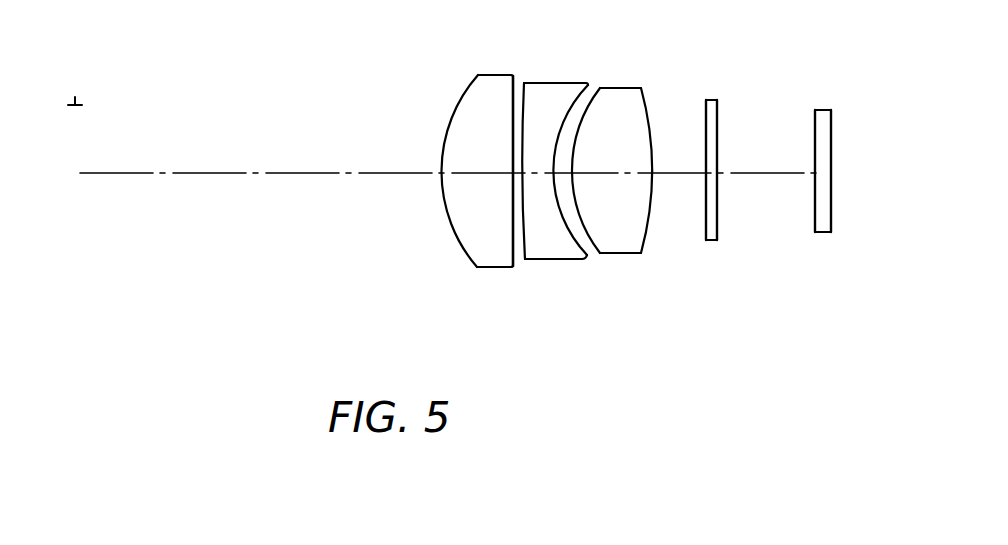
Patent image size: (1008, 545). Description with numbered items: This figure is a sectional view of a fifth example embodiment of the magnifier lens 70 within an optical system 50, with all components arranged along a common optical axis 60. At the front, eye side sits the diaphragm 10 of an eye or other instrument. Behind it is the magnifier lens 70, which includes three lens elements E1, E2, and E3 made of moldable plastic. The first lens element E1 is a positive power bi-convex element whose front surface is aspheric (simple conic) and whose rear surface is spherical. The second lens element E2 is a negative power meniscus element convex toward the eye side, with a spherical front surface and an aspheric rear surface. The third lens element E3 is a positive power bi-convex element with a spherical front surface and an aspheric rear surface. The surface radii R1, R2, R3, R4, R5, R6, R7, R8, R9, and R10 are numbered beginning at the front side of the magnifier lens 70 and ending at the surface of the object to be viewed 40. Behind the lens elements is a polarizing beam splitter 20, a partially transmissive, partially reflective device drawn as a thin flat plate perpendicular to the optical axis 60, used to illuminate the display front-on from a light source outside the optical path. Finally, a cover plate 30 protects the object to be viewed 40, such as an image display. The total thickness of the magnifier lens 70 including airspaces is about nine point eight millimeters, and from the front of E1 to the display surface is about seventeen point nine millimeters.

The diaphragm 10 is at (70, 233).
The polarizing beam splitter 20 is at (728, 163).
The cover plate 30 is at (802, 173).
The object to be viewed 40 is at (851, 173).
The optical system 50 is at (686, 397).
The optical axis 60 is at (302, 174).
The magnifier lens 70 is at (544, 189).
The first lens element E1 is at (460, 166).
The second lens element E2 is at (558, 166).
The third lens element E3 is at (626, 170).
The first surface radius R1 is at (455, 105).
The second surface radius R2 is at (512, 102).
The third surface radius R3 is at (521, 100).
The fourth surface radius R4 is at (563, 117).
The fifth surface radius R5 is at (580, 127).
The sixth surface radius R6 is at (647, 117).
The seventh surface radius R7 is at (704, 127).
The eighth surface radius R8 is at (720, 123).
The ninth surface radius R9 is at (813, 127).
The tenth surface radius R10 is at (832, 128).